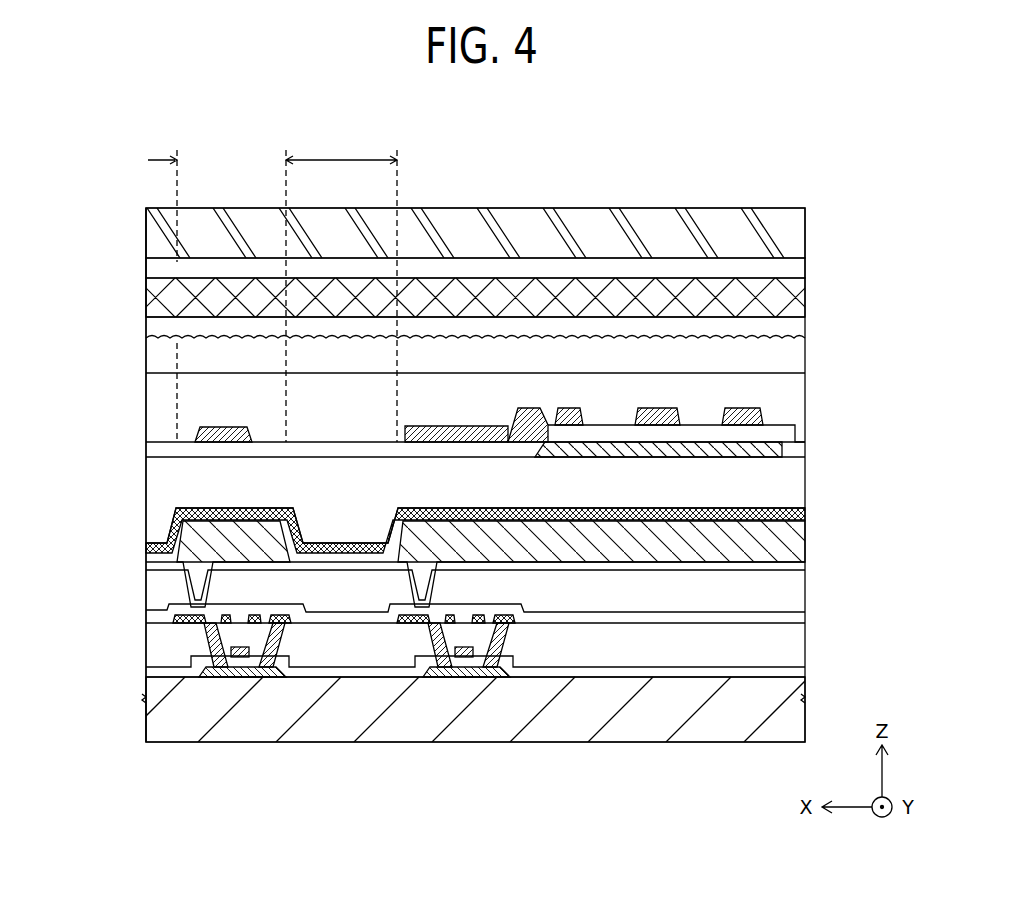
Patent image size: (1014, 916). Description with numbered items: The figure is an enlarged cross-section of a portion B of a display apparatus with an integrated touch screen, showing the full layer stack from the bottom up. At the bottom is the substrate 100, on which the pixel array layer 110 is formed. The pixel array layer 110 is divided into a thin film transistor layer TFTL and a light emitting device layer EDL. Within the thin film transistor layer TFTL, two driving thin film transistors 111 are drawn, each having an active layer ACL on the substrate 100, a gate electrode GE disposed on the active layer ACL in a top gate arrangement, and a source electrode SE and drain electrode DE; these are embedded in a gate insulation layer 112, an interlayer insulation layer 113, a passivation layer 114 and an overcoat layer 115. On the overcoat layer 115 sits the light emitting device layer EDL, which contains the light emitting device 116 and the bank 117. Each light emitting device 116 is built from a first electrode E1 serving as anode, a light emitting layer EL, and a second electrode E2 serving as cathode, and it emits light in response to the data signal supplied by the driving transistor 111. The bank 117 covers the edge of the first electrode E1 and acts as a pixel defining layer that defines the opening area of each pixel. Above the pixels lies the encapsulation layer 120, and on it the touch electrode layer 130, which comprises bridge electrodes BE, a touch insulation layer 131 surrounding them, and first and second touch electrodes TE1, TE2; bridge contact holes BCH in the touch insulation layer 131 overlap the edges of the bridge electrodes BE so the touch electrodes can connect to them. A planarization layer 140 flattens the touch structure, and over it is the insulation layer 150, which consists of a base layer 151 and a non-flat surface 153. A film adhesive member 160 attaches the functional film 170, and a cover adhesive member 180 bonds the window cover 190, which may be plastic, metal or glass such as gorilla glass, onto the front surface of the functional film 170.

The substrate 100 is at (146, 728).
The pixel array layer 110 is at (884, 527).
The thin film transistor 111 is at (325, 800).
The gate insulation layer 112 is at (146, 677).
The interlayer insulation layer 113 is at (146, 666).
The passivation layer 114 is at (146, 624).
The overcoat layer 115 is at (146, 605).
The light emitting device 116 is at (78, 522).
The bank 117 is at (170, 527).
The encapsulation layer 120 is at (800, 480).
The touch electrode layer 130 is at (810, 408).
The touch insulation layer 131 is at (146, 452).
The planarization layer 140 is at (800, 392).
The insulation layer 150 is at (876, 300).
The base layer 151 is at (805, 351).
The non-flat surface 153 is at (805, 325).
The film adhesive member 160 is at (146, 335).
The functional film 170 is at (146, 300).
The cover adhesive member 180 is at (146, 270).
The window cover 190 is at (146, 236).
The portion B is at (146, 208).
The first touch electrode TE1 is at (650, 408).
The second touch electrode TE2 is at (217, 427).
The bridge contact hole BCH is at (523, 407).
The bridge electrode BE is at (613, 440).
The first electrode E1 is at (146, 566).
The light emitting layer EL is at (146, 553).
The second electrode E2 is at (192, 540).
The light emitting device layer EDL is at (810, 570).
The thin film transistor layer TFTL is at (810, 570).
The source electrode SE is at (208, 645).
The gate electrode GE is at (240, 660).
The active layer ACL is at (250, 674).
The drain electrode DE is at (276, 645).